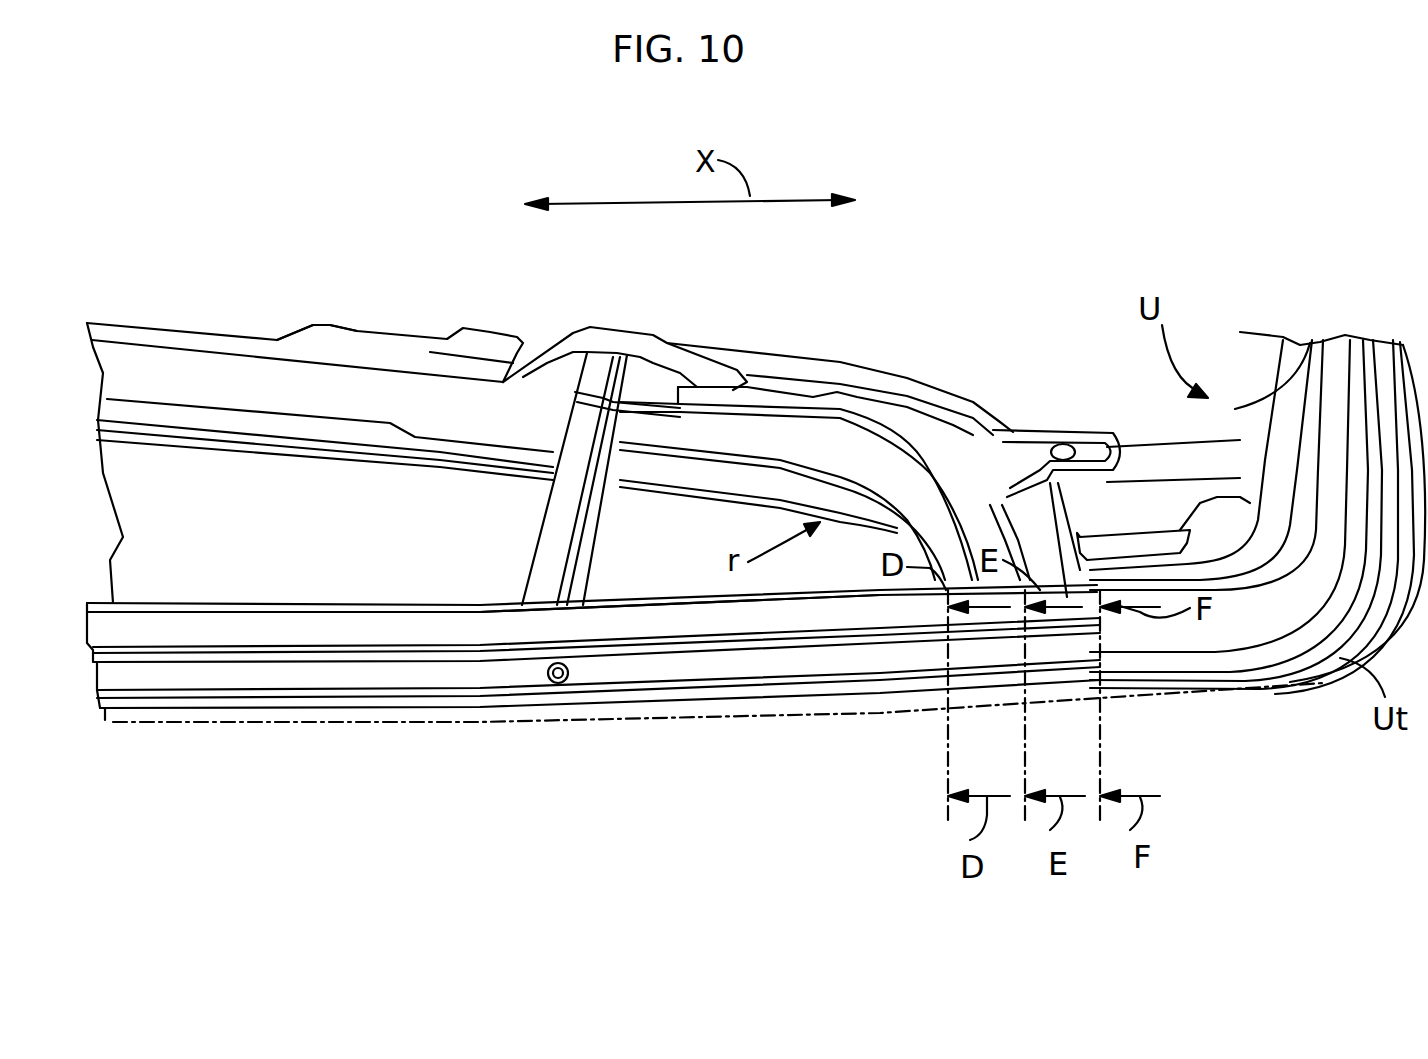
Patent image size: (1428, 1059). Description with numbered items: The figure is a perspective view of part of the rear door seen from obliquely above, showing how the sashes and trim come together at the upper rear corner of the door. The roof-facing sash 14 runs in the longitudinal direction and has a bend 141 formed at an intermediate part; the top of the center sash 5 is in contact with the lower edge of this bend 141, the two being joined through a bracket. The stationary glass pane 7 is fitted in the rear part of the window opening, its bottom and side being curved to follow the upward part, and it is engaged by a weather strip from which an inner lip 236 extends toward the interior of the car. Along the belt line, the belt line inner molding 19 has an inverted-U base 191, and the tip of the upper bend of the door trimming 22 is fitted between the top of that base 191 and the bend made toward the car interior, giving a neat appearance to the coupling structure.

The belt line inner molding 19 is at (245, 337).
The base 191 is at (340, 365).
The center sash 5 is at (548, 552).
The inner lip 236 is at (853, 455).
The door trimming 22 is at (1305, 363).
The roof-facing sash 14 is at (417, 660).
The bend 141 is at (520, 677).
The stationary glass pane 7 is at (655, 580).